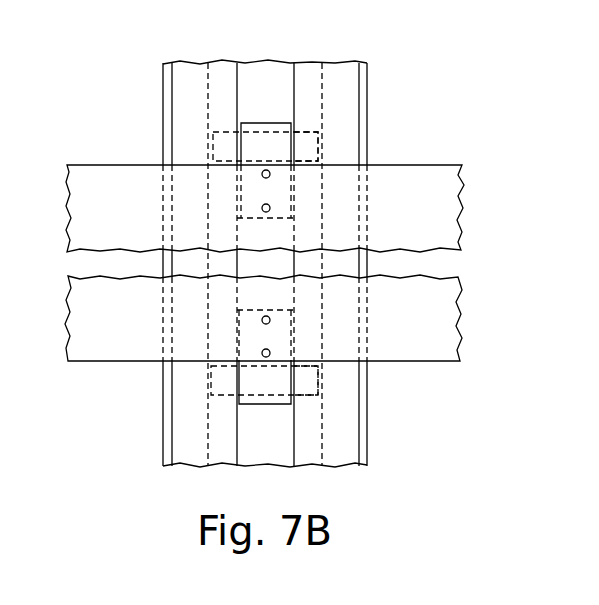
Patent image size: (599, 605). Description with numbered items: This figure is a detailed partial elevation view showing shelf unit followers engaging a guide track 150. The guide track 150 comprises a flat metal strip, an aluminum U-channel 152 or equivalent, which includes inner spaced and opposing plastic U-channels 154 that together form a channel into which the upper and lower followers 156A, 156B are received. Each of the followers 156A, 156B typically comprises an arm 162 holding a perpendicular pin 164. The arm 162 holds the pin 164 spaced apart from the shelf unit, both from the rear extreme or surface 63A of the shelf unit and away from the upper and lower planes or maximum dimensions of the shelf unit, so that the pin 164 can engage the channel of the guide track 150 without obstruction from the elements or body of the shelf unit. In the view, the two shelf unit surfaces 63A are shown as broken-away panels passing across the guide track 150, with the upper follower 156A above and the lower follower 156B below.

The guide track 150 is at (148, 142).
The aluminum U-channel 152 is at (273, 124).
The plastic U-channel 154 is at (225, 142).
The upper follower 156A is at (330, 139).
The lower follower 156B is at (326, 388).
The arm 162 is at (263, 400).
The pin 164 is at (223, 381).
The rear surface of the shelf unit 63A is at (142, 235).